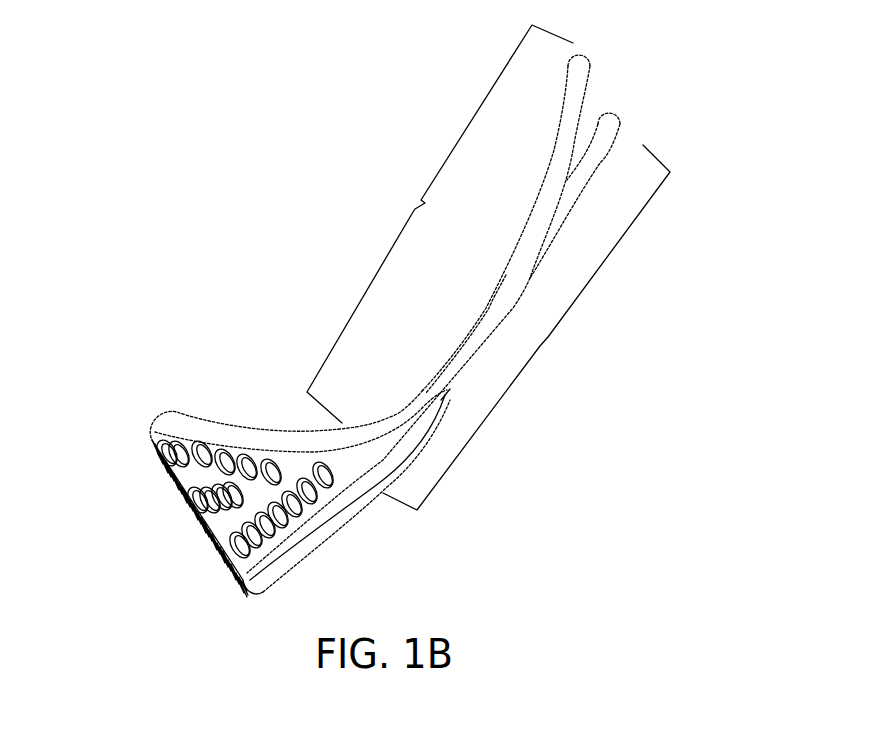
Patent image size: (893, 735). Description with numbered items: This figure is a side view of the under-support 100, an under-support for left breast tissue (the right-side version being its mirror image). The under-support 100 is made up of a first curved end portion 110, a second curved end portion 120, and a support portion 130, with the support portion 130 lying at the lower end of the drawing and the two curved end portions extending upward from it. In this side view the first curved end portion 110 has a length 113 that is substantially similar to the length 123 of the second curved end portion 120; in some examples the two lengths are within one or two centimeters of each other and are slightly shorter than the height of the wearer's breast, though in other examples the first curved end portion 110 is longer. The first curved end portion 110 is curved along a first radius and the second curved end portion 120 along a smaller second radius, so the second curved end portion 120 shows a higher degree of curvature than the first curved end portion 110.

The under-support 100 is at (188, 155).
The first curved end portion 110 is at (610, 148).
The length of first curved end portion 113 is at (548, 337).
The second curved end portion 120 is at (497, 322).
The length of second curved end portion 123 is at (419, 202).
The support portion 130 is at (197, 480).